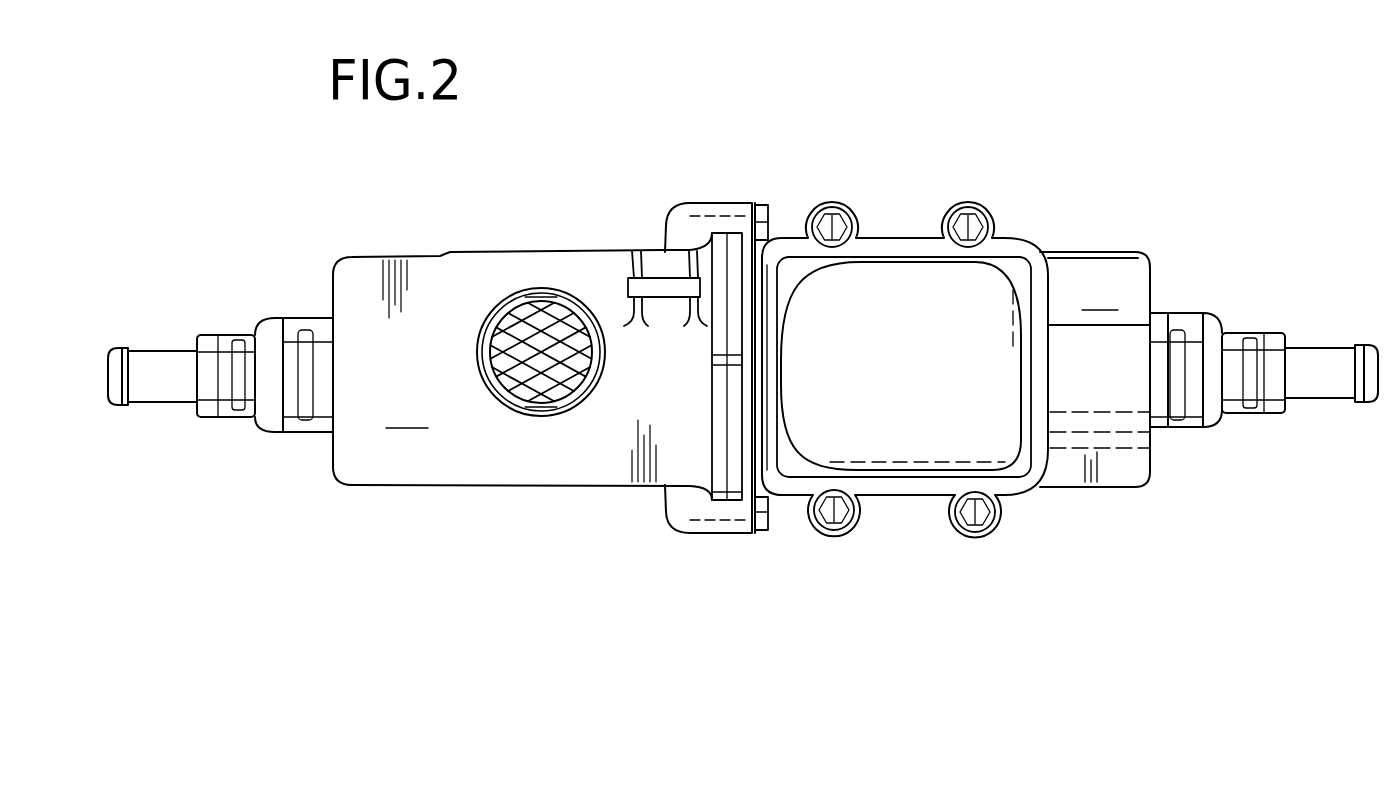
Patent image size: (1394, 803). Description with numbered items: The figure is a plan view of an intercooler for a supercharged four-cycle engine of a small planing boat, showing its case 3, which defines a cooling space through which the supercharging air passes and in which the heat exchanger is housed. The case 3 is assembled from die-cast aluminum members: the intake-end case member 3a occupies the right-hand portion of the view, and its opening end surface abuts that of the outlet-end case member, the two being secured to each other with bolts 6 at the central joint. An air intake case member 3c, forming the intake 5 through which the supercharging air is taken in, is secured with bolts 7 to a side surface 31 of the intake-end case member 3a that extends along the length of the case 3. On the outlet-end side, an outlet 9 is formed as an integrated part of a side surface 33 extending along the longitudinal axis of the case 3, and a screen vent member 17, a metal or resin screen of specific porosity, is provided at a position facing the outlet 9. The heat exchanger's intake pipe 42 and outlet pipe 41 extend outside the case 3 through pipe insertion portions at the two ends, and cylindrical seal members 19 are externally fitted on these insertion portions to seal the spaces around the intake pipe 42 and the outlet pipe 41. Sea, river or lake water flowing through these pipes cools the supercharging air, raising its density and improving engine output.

The case 3 is at (402, 248).
The intake-end case member 3a is at (1090, 252).
The air intake case member 3c is at (918, 448).
The intake 5 is at (1133, 425).
The bolts 6 is at (768, 220).
The bolts 7 is at (976, 222).
The outlet 9 is at (540, 418).
The screen vent member 17 is at (530, 300).
The cylindrical seal members 19 is at (262, 422).
The side surface 31 is at (1095, 288).
The side surface 33 is at (407, 411).
The outlet pipe 41 is at (1330, 380).
The intake pipe 42 is at (152, 387).